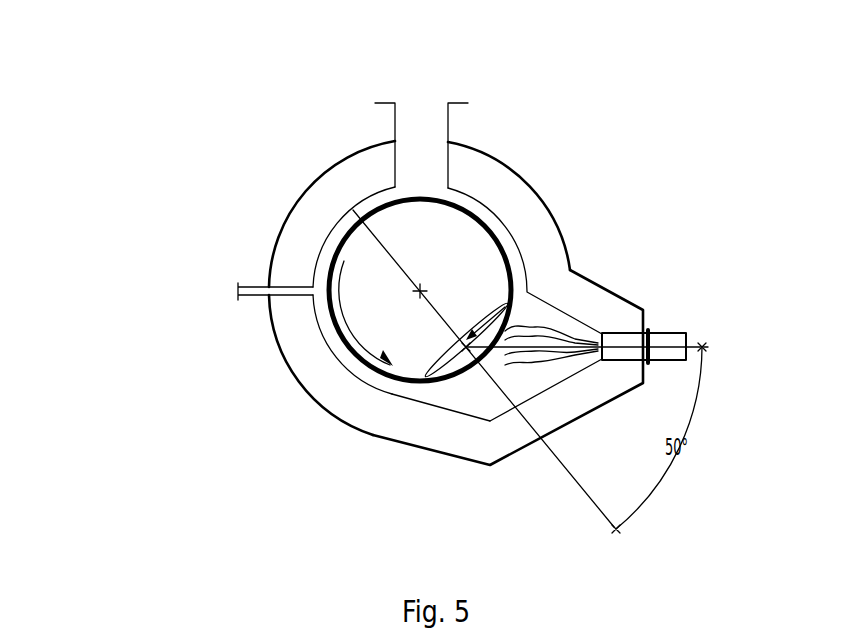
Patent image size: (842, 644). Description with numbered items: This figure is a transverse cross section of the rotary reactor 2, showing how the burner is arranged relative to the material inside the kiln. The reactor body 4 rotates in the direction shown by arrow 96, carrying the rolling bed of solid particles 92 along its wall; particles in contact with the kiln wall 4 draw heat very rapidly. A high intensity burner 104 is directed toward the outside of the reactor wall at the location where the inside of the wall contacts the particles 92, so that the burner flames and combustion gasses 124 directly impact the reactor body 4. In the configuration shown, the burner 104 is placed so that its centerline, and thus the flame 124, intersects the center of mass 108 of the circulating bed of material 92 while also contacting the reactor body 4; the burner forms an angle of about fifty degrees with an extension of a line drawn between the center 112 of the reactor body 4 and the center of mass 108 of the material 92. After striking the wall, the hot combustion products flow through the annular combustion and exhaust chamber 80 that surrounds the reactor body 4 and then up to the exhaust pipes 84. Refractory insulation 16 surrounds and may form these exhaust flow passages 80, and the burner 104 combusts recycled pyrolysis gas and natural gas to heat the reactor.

The cleaning device 2 is at (322, 132).
The reactor body 4 is at (503, 245).
The refractory insulation 16 is at (598, 297).
The annular combustion and exhaust chamber 80 is at (490, 205).
The exhaust pipes 84 is at (427, 147).
The rolling bed of solid particles 92 is at (455, 375).
The arrow indicating direction of rotation 96 is at (342, 312).
The high intensity burner 104 is at (662, 337).
The center of mass of the circulating bed 108 is at (458, 350).
The center of the reactor body 112 is at (353, 210).
The burner flames and combustion gasses 124 is at (542, 335).